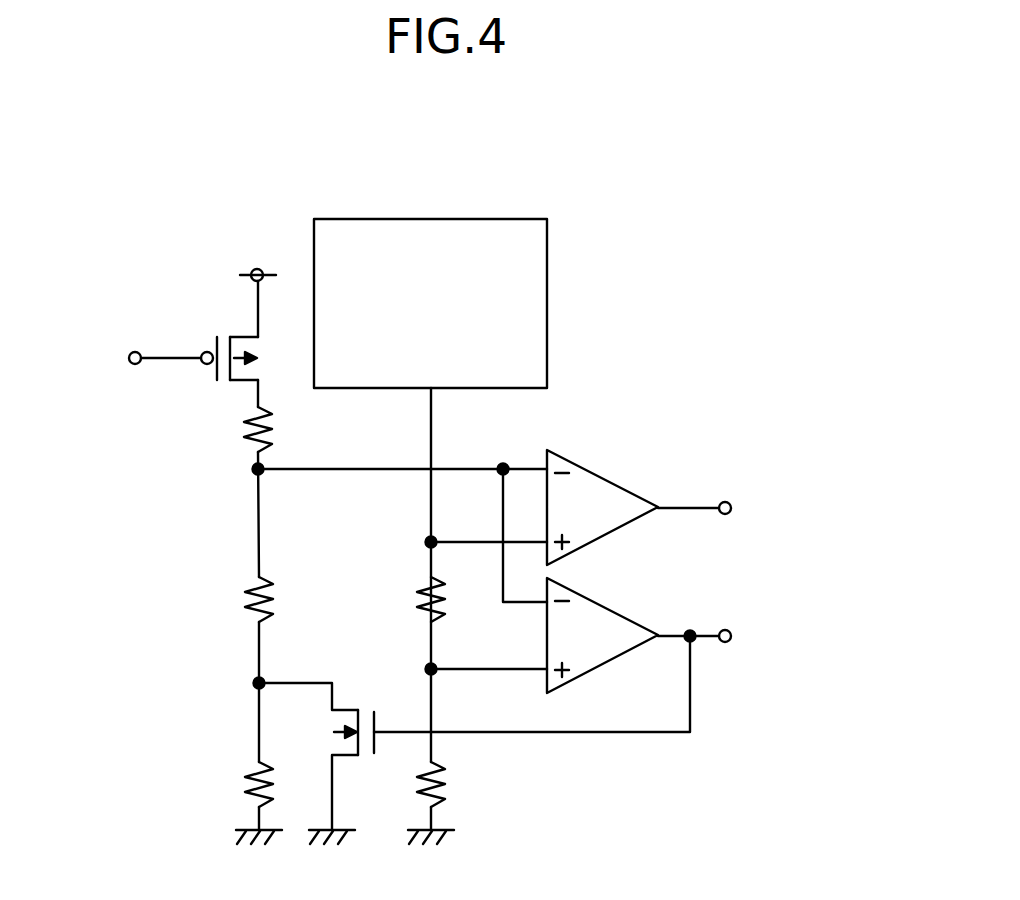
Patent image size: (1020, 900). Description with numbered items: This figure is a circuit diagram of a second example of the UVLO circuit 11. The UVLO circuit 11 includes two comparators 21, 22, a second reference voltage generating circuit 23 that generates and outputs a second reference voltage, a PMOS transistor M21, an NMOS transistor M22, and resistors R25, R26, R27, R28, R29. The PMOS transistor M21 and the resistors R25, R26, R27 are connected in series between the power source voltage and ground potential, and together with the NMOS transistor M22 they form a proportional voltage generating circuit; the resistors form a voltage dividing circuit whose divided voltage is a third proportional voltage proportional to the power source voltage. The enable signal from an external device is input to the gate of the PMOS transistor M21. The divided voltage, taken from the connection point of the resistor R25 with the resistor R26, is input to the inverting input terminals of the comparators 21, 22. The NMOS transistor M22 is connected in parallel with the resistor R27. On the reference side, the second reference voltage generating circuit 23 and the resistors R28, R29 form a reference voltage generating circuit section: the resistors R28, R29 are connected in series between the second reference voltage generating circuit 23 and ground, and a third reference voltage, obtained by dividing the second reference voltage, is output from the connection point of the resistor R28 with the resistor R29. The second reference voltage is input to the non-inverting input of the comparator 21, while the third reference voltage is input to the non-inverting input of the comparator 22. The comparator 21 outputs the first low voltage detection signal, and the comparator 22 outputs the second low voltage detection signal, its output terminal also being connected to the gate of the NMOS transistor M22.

The UVLO circuit 11 is at (725, 380).
The comparator 21 is at (600, 478).
The comparator 22 is at (600, 606).
The second reference voltage generating circuit 23 is at (430, 218).
The PMOS transistor M21 is at (225, 342).
The NMOS transistor M22 is at (327, 754).
The resistor R25 is at (225, 429).
The resistor R26 is at (225, 599).
The resistor R27 is at (226, 784).
The resistor R28 is at (398, 599).
The resistor R29 is at (465, 784).